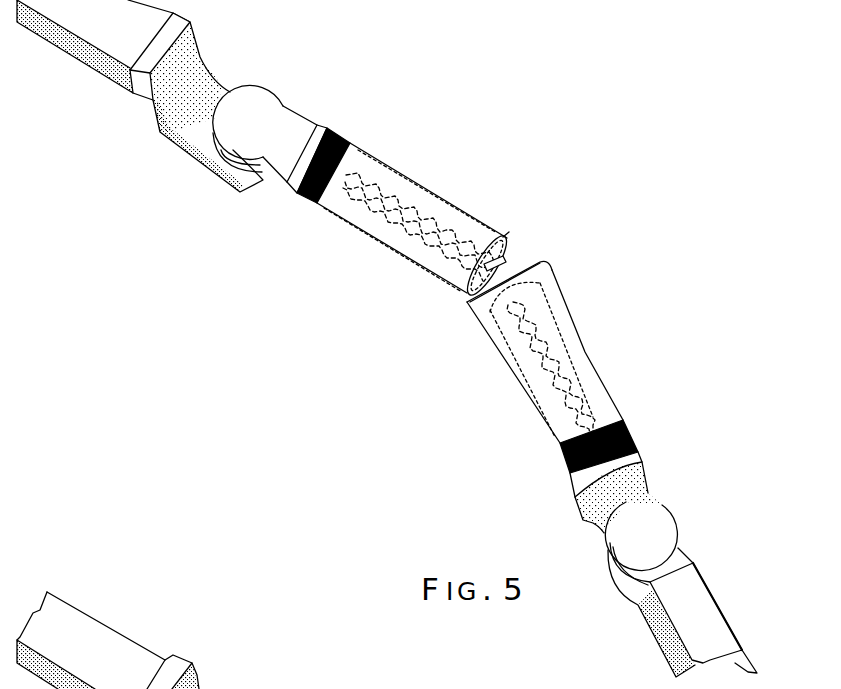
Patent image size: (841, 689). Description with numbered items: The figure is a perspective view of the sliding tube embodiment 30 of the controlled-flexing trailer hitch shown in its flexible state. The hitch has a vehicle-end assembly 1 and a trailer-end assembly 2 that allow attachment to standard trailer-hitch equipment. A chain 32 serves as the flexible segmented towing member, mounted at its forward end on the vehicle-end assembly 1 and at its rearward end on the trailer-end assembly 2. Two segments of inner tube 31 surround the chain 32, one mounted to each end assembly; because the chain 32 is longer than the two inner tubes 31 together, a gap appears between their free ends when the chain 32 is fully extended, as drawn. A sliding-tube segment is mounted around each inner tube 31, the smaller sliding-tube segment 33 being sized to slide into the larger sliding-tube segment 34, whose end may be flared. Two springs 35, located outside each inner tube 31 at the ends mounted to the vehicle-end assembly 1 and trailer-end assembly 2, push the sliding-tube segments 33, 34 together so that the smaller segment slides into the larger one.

The vehicle-end assembly 1 is at (333, 68).
The trailer-end assembly 2 is at (594, 545).
The sliding tube embodiment 30 is at (473, 240).
The inner tube 31 is at (400, 167).
The chain 32 is at (507, 260).
The smaller sliding-tube segment 33 is at (503, 237).
The larger sliding-tube segment 34 is at (544, 265).
The spring 35 is at (310, 192).